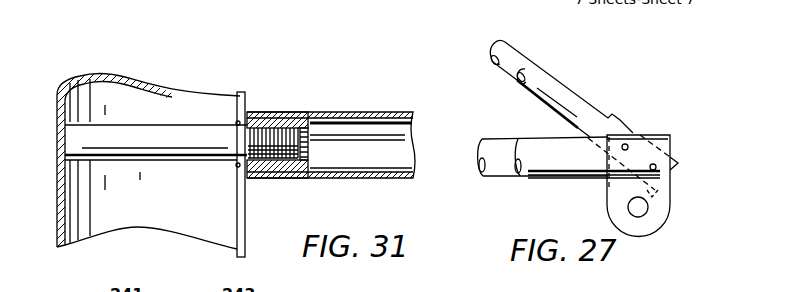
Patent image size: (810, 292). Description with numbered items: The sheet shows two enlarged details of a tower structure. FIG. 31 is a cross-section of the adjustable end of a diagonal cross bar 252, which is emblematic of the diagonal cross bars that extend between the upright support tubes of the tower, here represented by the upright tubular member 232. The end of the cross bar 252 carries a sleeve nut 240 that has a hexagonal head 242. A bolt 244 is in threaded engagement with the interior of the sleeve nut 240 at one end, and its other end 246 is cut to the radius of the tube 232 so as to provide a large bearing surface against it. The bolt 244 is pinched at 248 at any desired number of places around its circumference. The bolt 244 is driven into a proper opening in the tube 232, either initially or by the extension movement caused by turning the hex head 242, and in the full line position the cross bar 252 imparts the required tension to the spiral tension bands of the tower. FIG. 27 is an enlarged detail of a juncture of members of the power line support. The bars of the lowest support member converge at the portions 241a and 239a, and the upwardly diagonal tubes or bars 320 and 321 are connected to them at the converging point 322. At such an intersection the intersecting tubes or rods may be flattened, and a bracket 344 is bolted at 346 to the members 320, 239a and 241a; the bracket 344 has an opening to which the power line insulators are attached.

In FIG. 31, the upright tubular member 232 is at (125, 215).
In FIG. 31, the bolt 244 is at (177, 143).
In FIG. 31, the bolt end 246 is at (63, 147).
In FIG. 31, the pinched portion of bolt 248 is at (237, 167).
In FIG. 31, the sleeve nut 240 is at (305, 152).
In FIG. 31, the hexagonal head 242 is at (265, 112).
In FIG. 31, the diagonal cross bar 252 is at (392, 160).
In FIG. 27, the upwardly diagonal tube 320 is at (553, 90).
In FIG. 27, the upwardly diagonal tube 321 is at (515, 58).
In FIG. 27, the converging point 322 is at (657, 93).
In FIG. 27, the converging portion of bar 241a is at (498, 148).
In FIG. 27, the converging portion of bar 239a is at (567, 157).
In FIG. 27, the bracket 344 is at (658, 205).
In FIG. 27, the bolt connection 346 is at (655, 167).